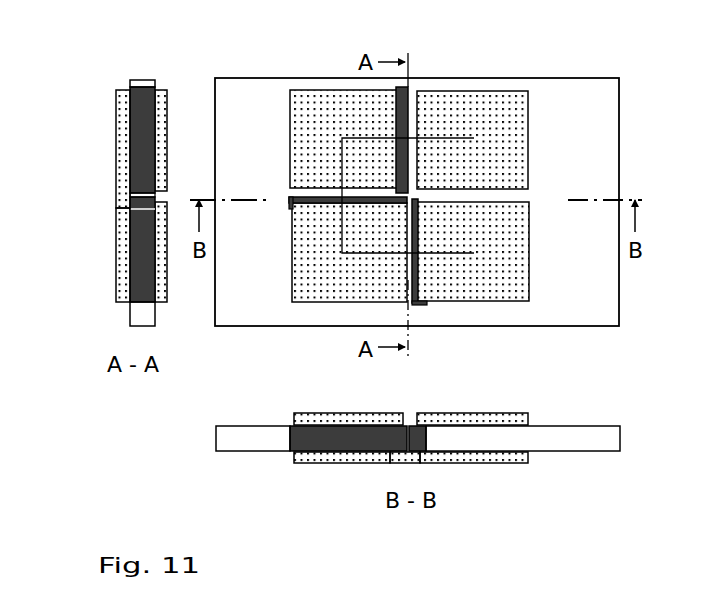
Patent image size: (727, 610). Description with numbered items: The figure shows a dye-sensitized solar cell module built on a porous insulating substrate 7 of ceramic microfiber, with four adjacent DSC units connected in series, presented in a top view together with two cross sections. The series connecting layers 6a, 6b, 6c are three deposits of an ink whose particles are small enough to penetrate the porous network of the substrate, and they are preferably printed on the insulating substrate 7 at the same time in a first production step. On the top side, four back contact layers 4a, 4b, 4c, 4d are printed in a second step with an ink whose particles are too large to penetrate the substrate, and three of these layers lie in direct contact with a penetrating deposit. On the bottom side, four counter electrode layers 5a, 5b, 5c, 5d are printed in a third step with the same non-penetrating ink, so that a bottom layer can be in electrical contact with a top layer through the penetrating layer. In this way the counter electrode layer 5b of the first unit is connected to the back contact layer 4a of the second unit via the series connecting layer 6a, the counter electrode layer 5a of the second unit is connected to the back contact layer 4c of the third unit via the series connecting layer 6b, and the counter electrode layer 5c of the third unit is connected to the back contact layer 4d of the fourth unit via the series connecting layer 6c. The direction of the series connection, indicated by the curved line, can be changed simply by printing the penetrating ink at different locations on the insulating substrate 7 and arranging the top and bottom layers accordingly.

The insulating substrate 7 is at (571, 92).
The back contact layer 4a is at (328, 92).
The back contact layer 4b is at (487, 92).
The back contact layer 4c is at (338, 303).
The back contact layer 4d is at (487, 303).
The counter electrode layer 5a is at (122, 137).
The counter electrode layer 5b is at (122, 251).
The counter electrode layer 5c is at (296, 457).
The counter electrode layer 5d is at (525, 458).
The series connecting layer 6a is at (410, 88).
The series connecting layer 6b is at (289, 199).
The series connecting layer 6c is at (415, 305).